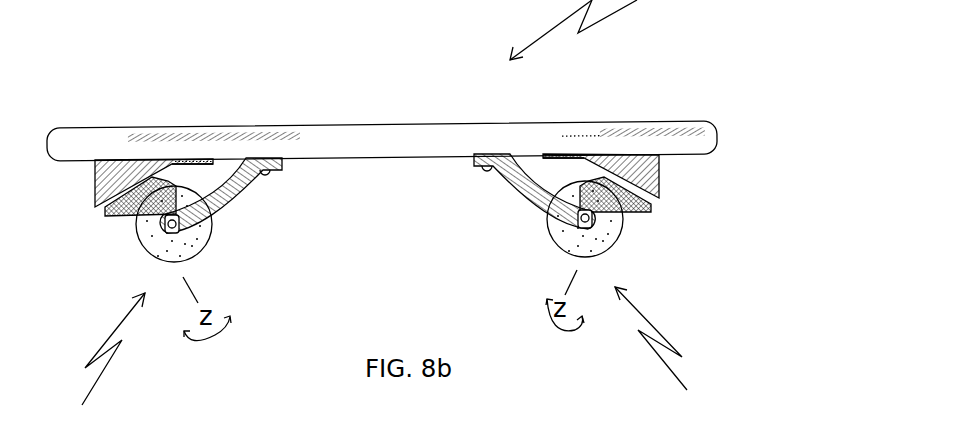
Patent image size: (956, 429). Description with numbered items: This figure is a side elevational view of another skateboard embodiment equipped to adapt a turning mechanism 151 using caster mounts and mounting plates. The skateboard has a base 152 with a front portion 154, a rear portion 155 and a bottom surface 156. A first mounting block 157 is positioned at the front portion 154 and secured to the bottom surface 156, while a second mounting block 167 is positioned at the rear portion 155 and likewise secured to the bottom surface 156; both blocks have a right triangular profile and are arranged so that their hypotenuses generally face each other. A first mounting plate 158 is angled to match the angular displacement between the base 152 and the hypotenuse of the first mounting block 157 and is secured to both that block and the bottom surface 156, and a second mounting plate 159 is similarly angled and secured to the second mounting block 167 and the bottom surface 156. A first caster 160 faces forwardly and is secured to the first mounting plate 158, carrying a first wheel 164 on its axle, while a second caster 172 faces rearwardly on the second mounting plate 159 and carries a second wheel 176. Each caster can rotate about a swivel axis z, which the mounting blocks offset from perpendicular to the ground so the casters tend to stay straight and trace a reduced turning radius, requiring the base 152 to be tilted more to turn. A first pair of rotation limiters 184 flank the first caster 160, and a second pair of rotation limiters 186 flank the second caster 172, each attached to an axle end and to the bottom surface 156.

The turning mechanism 151 is at (383, 213).
The base 152 is at (352, 147).
The front portion 154 is at (144, 127).
The rear portion 155 is at (587, 121).
The bottom surface 156 is at (372, 157).
The first mounting block 157 is at (95, 175).
The first mounting plate 158 is at (205, 164).
The second mounting plate 159 is at (523, 188).
The first caster 160 is at (110, 222).
The first wheel 164 is at (154, 263).
The second mounting block 167 is at (663, 158).
The second caster 172 is at (633, 208).
The second wheel 176 is at (617, 233).
The first pair of rotation limiters 184 is at (207, 233).
The second pair of rotation limiters 186 is at (557, 243).